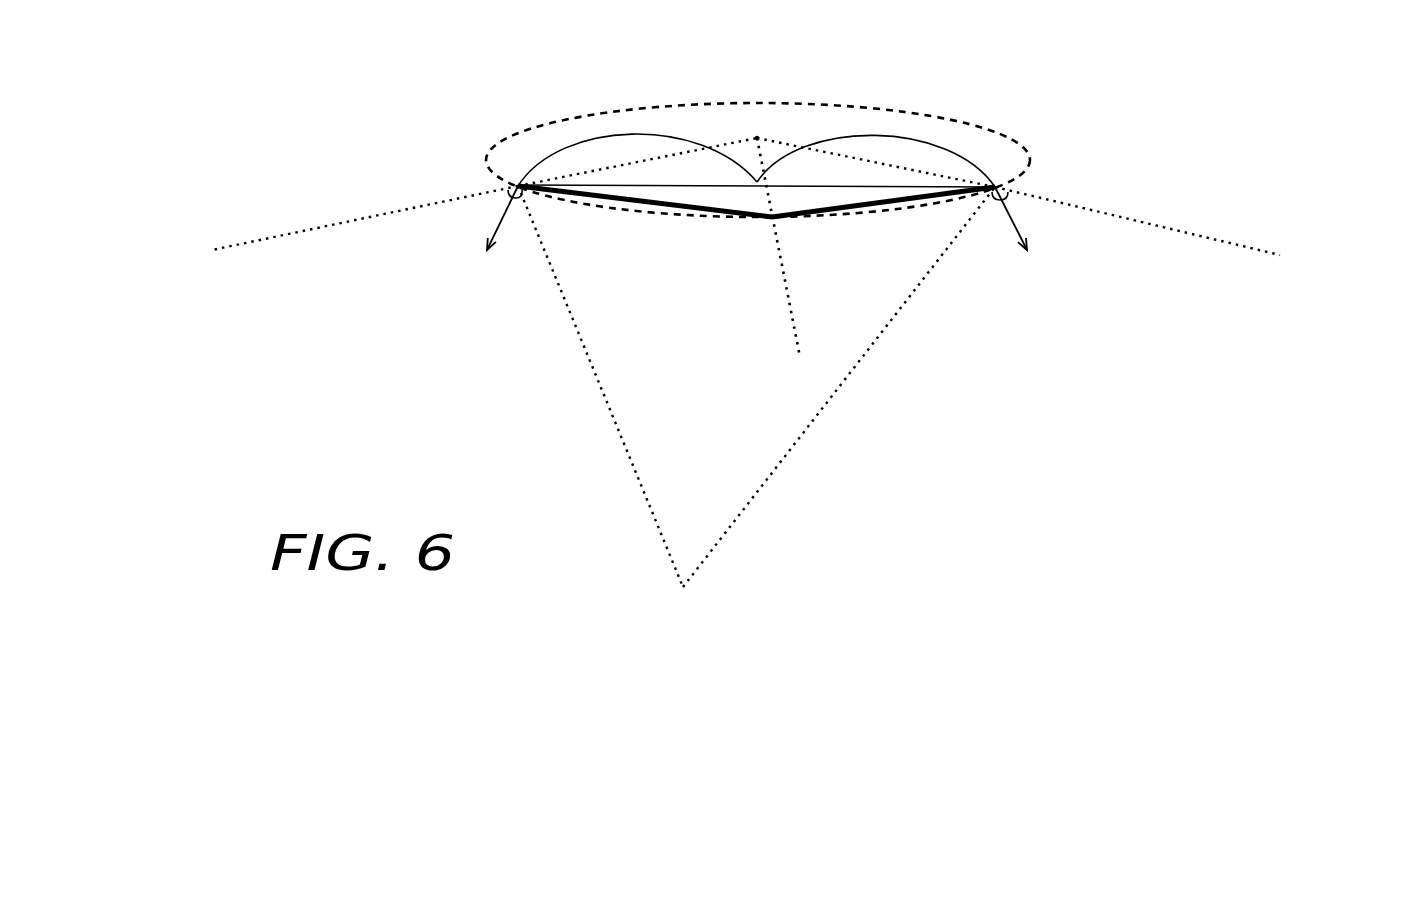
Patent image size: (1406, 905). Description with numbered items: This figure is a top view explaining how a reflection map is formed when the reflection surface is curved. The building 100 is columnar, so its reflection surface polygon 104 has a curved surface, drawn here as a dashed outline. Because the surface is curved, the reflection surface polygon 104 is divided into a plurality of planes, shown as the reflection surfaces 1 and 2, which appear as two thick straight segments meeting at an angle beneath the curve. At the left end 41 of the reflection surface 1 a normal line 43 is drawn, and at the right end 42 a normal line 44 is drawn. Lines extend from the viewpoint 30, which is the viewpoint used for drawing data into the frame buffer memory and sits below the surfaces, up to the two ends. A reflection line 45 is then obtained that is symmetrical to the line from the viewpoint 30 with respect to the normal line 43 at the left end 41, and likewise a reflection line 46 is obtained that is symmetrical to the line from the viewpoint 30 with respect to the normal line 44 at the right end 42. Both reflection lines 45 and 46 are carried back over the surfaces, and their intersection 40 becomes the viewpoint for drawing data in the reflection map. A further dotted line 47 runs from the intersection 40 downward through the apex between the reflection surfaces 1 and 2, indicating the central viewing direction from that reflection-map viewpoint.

The reflection surface 1 is at (600, 202).
The reflection surface 2 is at (883, 203).
The viewpoint for drawing data in the frame buffer memory 30 is at (688, 590).
The viewpoint for drawing data in the reflection map 40 is at (757, 138).
The left end of the reflection surface 41 is at (488, 169).
The right end of the reflection surface 42 is at (1023, 188).
The normal line 43 is at (485, 217).
The normal line 44 is at (1028, 218).
The reflection line 45 is at (352, 228).
The reflection line 46 is at (1118, 224).
The center line of view 47 is at (784, 282).
The building 100 is at (550, 137).
The reflection surface polygon 104 is at (690, 217).